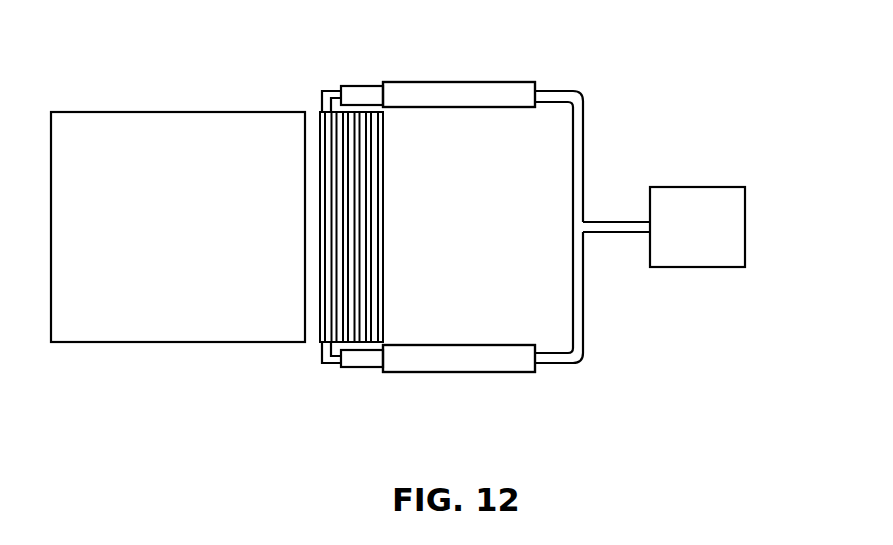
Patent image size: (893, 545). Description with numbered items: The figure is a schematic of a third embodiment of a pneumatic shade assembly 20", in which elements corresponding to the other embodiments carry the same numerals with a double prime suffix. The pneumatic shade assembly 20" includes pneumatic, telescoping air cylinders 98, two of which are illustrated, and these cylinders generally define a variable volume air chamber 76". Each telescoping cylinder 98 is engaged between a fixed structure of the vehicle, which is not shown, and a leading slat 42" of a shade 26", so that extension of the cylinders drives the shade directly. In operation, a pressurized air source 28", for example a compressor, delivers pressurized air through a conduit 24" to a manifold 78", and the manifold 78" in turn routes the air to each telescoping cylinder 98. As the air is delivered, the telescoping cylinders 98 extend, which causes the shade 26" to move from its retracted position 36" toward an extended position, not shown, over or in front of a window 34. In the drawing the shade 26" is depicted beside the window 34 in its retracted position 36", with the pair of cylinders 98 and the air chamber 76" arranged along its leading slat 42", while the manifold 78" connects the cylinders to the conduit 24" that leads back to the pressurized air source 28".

The pneumatic shade assembly 20 is at (747, 53).
The window 34 is at (93, 112).
The retracted position 36 is at (390, 177).
The shade 26 is at (390, 277).
The leading slat 42 is at (320, 255).
The manifold 78 is at (572, 263).
The variable volume air chamber 76 is at (522, 93).
The telescoping air cylinder 98 is at (432, 82).
The conduit 24 is at (617, 220).
The pressurized air source 28 is at (727, 187).